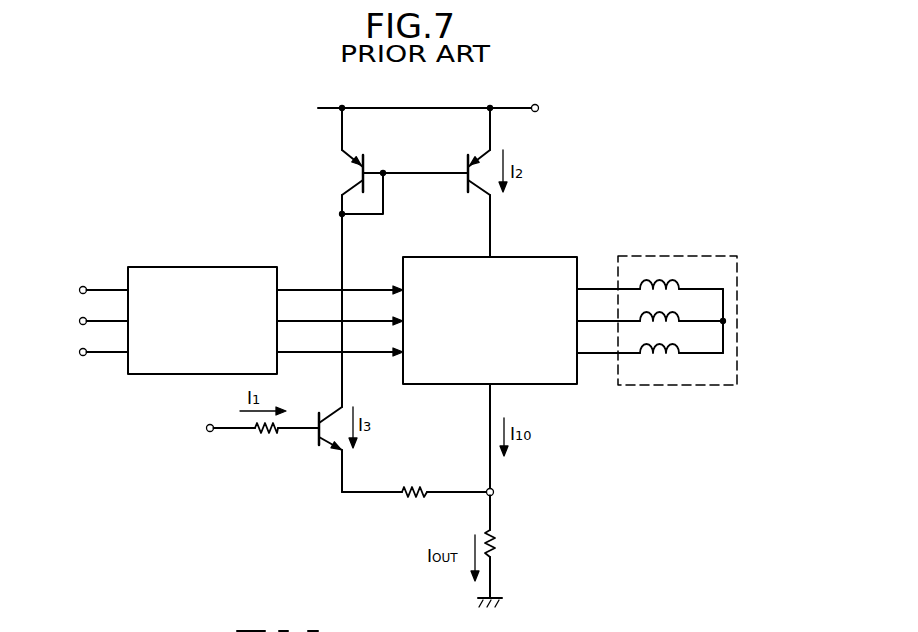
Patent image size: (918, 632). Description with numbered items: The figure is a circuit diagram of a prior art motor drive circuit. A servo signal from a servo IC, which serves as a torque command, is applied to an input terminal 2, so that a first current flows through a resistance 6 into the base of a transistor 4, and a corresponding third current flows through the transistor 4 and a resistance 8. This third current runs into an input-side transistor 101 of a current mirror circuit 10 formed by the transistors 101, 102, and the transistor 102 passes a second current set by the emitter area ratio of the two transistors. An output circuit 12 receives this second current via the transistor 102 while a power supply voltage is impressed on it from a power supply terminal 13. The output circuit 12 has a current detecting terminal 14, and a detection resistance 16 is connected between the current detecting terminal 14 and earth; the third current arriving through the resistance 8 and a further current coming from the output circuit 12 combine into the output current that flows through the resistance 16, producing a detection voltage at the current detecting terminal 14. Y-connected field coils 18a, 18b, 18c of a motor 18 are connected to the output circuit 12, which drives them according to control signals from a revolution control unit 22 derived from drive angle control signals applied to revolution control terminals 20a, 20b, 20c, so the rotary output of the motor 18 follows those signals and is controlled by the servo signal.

The input terminal 2 is at (210, 433).
The transistor 4 is at (334, 402).
The resistance 6 is at (262, 433).
The resistance 8 is at (408, 497).
The current mirror circuit 10 is at (432, 163).
The output circuit 12 is at (553, 257).
The power supply terminal 13 is at (535, 104).
The current detecting terminal 14 is at (495, 490).
The resistance 16 is at (494, 544).
The motor 18 is at (663, 386).
The field coil 18a is at (679, 284).
The field coil 18b is at (676, 316).
The field coil 18c is at (676, 349).
The revolution control terminal 20a is at (84, 286).
The revolution control terminal 20b is at (86, 319).
The revolution control terminal 20c is at (84, 356).
The revolution control unit 22 is at (203, 267).
The input-side transistor 101 is at (347, 186).
The transistor 102 is at (468, 182).